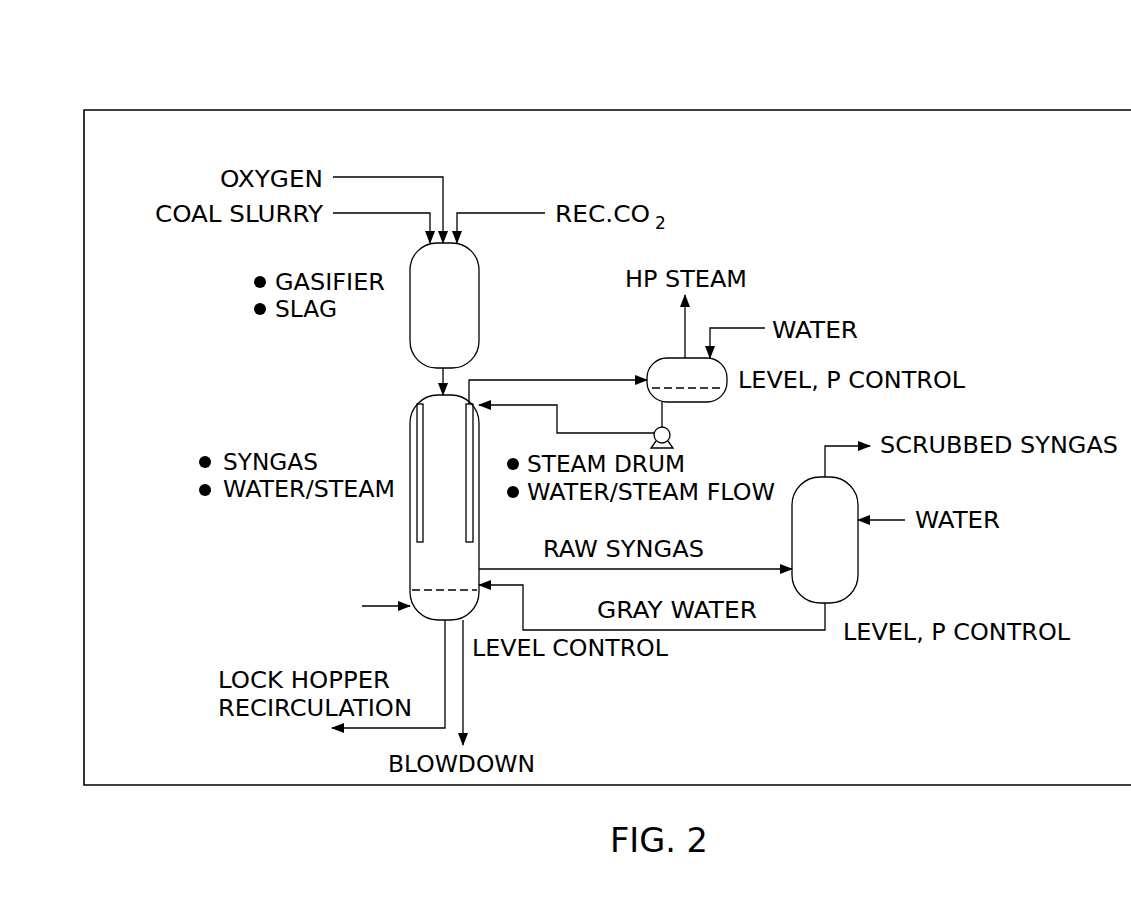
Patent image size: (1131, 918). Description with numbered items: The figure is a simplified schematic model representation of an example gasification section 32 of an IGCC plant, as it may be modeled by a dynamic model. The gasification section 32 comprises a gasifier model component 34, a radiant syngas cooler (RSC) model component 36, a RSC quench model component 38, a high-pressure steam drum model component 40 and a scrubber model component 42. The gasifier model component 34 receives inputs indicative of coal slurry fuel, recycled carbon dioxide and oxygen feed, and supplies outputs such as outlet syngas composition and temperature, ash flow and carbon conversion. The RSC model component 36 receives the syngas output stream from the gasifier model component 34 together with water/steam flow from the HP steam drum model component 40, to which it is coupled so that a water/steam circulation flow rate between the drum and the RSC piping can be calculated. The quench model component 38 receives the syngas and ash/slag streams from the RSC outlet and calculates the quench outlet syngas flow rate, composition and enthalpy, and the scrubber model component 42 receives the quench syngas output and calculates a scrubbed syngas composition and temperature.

The gasification section 32 is at (867, 108).
The gasifier model component 34 is at (410, 345).
The radiant syngas cooler (RSC) model component 36 is at (410, 568).
The RSC quench model component 38 is at (413, 617).
The high-pressure (HP) steam drum model component 40 is at (722, 398).
The scrubber model component 42 is at (858, 562).